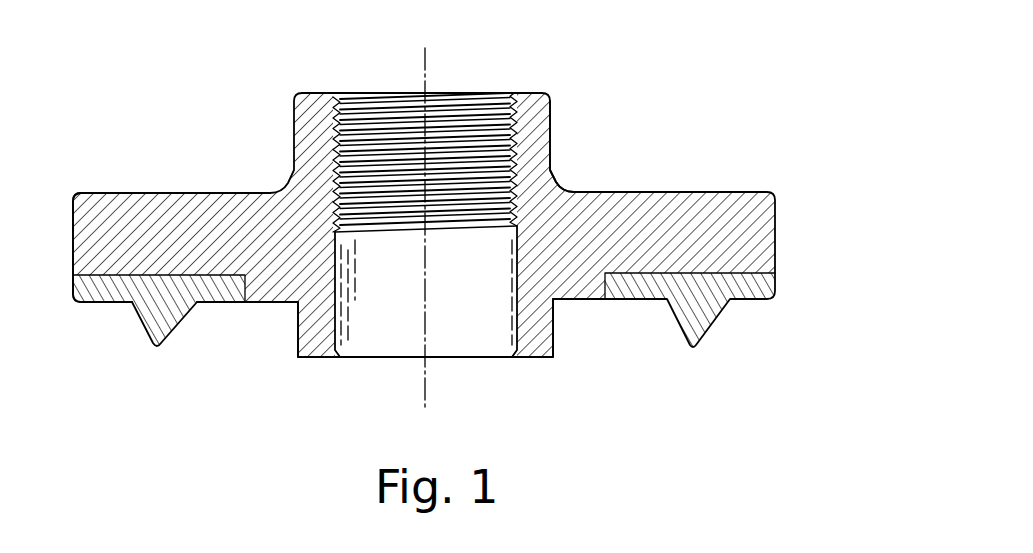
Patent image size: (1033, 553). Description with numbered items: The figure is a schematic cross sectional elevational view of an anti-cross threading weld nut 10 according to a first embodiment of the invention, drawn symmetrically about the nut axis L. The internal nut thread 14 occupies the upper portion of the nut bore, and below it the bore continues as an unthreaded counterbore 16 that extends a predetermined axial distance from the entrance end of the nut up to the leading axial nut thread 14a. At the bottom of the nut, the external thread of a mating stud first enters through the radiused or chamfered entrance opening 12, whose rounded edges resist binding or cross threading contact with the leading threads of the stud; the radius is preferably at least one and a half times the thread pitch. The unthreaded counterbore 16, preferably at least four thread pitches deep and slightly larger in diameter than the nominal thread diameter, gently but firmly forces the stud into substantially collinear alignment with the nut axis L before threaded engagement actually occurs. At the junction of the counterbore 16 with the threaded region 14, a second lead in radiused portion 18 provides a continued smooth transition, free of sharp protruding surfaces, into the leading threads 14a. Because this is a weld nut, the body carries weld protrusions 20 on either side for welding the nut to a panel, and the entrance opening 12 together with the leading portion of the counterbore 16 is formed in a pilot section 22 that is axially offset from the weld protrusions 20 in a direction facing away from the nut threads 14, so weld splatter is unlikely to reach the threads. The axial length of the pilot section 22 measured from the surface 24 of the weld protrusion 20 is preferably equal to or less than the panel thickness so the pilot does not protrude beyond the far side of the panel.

The nut 10 is at (668, 85).
The entrance opening 12 is at (332, 352).
The nut thread 14 is at (333, 125).
The leading axial nut thread 14a is at (368, 247).
The unthreaded counterbore 16 is at (335, 288).
The second lead in radiused portion 18 is at (520, 230).
The weld protrusion 20 is at (167, 332).
The pilot section 22 is at (540, 333).
The surface of the weld protrusion 24 is at (92, 303).
The nut axis L is at (425, 63).